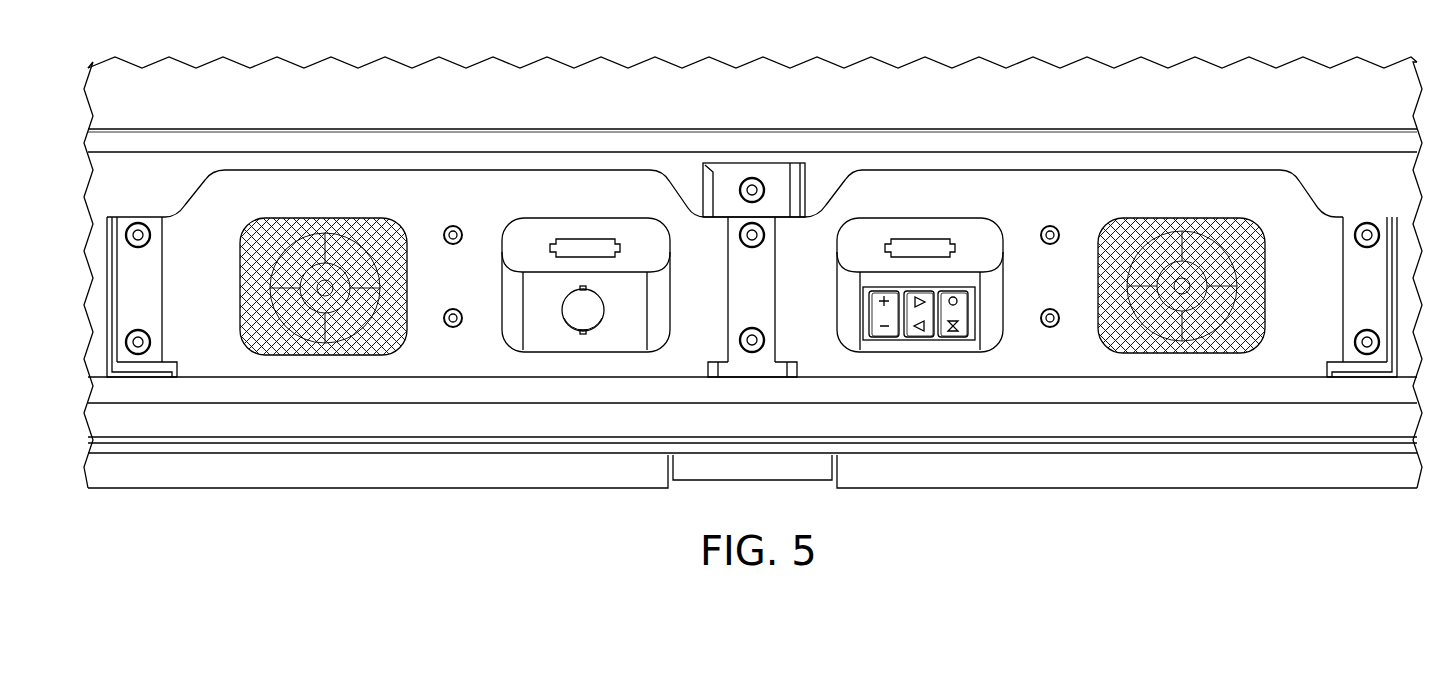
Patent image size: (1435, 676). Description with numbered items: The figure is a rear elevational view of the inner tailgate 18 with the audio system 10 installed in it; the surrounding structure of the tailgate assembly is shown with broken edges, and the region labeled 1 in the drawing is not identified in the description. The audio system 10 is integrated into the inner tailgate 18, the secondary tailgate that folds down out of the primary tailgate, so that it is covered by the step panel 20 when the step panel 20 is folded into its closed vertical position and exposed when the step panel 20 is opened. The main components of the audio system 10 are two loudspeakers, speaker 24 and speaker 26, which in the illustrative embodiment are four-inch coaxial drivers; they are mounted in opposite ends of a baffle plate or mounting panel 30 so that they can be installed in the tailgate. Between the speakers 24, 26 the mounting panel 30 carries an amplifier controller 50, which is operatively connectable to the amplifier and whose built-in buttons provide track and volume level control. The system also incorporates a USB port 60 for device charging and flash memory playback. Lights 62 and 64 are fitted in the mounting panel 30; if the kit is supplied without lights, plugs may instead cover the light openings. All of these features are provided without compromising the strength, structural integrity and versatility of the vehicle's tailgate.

The housing 1 is at (1397, 188).
The audio system 10 is at (677, 180).
The inner tailgate 18 is at (797, 173).
The step panel 20 is at (490, 427).
The speaker 24 is at (363, 237).
The speaker 26 is at (1140, 237).
The mounting panel 30 is at (265, 178).
The amplifier controller 50 is at (877, 313).
The USB port 60 is at (597, 313).
The light 62 is at (595, 243).
The light 64 is at (912, 242).